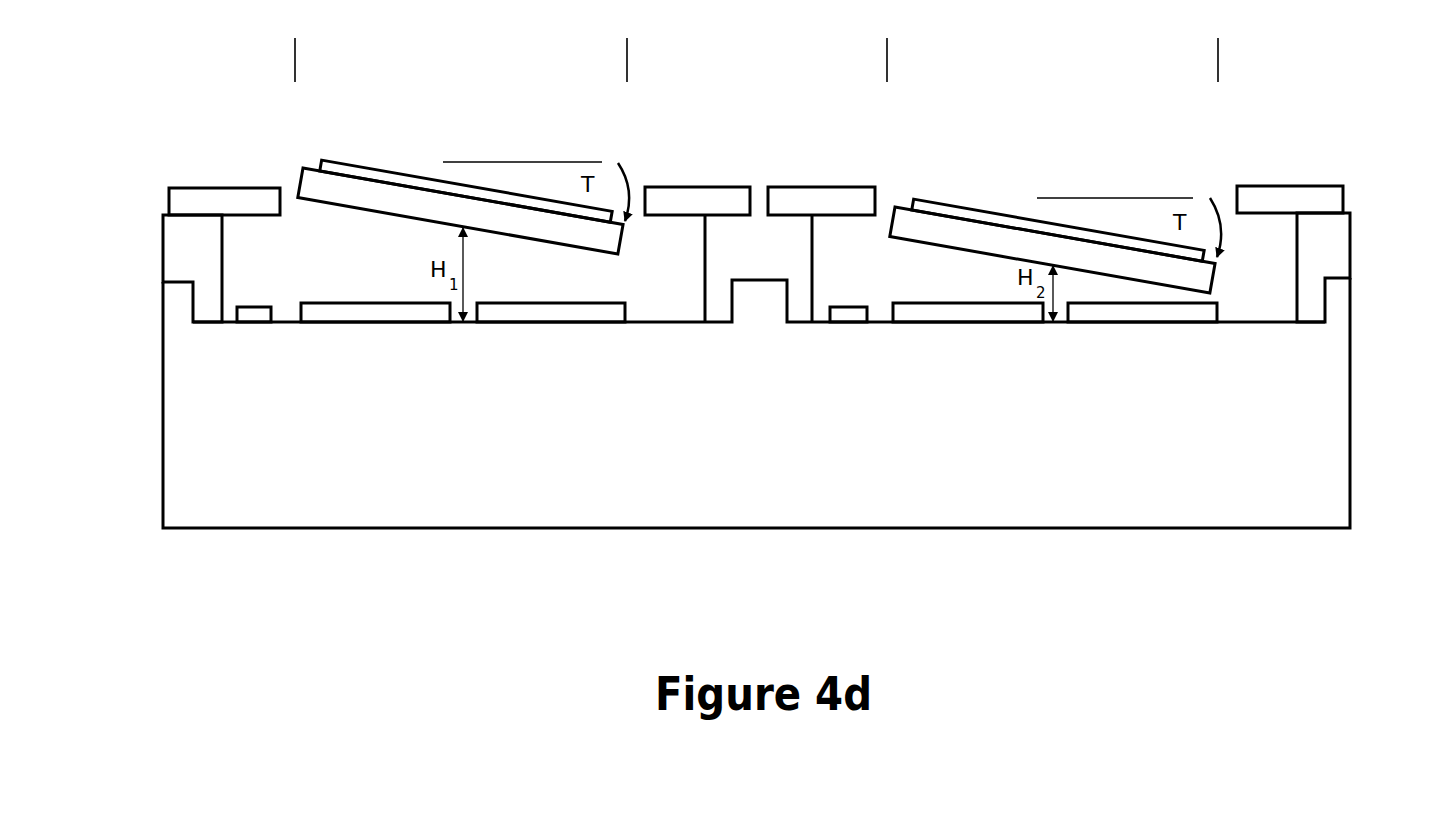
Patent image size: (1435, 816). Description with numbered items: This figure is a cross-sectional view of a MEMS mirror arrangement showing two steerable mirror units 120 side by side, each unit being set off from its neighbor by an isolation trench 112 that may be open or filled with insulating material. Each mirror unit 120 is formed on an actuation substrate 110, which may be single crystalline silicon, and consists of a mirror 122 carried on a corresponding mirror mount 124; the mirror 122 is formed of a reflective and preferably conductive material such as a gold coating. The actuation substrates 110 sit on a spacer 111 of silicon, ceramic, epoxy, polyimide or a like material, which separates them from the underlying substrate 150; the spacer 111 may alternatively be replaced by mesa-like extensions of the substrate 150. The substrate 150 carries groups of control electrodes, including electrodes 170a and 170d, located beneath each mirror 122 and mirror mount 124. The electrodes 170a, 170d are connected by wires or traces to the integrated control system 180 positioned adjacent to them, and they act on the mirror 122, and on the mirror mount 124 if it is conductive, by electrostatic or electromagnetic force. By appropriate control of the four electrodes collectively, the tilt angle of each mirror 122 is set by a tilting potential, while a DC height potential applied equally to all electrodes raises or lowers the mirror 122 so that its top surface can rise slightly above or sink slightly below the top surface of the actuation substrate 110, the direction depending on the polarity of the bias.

The actuation substrate 110 is at (203, 202).
The spacer 111 is at (756, 267).
The isolation trench 112 is at (760, 198).
The mirror unit 120 is at (756, 60).
The mirror 122 is at (365, 168).
The mirror mount 124 is at (335, 183).
The substrate 150 is at (756, 403).
The electrode 170a is at (377, 322).
The electrode 170d is at (558, 322).
The integrated control system 180 is at (254, 302).